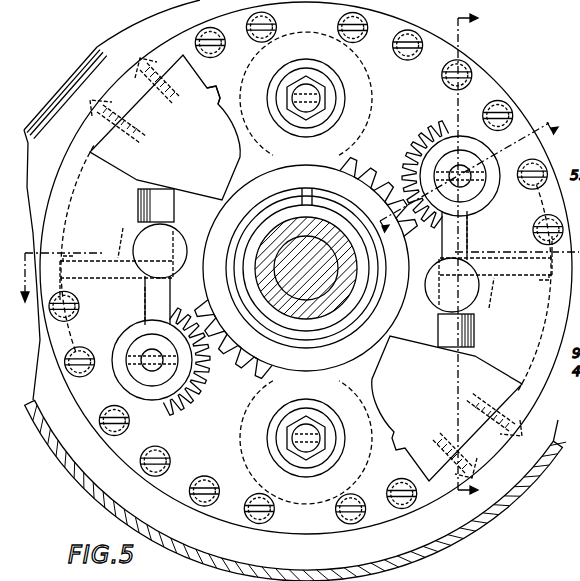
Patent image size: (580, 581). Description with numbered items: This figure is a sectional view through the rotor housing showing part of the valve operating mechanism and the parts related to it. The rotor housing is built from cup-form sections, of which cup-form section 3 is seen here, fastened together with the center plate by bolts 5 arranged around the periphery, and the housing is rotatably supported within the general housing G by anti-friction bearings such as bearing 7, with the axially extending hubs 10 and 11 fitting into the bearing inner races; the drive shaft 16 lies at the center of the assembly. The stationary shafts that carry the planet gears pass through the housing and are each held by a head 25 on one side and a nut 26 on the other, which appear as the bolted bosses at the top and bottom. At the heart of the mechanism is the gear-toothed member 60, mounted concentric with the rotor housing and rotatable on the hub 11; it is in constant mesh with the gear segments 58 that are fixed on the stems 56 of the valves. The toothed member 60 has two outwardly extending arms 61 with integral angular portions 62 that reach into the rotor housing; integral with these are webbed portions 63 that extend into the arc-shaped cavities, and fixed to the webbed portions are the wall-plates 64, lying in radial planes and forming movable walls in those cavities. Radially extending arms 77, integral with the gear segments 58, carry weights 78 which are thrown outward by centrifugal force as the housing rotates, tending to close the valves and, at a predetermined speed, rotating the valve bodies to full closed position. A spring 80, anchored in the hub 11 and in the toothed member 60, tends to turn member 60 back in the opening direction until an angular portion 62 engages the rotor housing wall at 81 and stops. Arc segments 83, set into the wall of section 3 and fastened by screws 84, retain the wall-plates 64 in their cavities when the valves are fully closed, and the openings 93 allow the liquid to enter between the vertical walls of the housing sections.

The cup-form section 3 is at (133, 450).
The bolts 5 is at (476, 73).
The anti-friction bearing 7 is at (475, 186).
The hub 10 is at (479, 258).
The hub 11 is at (333, 233).
The drive shaft 16 is at (306, 268).
The head 25 is at (278, 127).
The nut 26 is at (303, 92).
The valve stem 56 is at (148, 363).
The gear segment 58 is at (178, 392).
The gear-toothed member 60 is at (302, 365).
The outwardly extending arm 61 is at (193, 200).
The angular portion 62 is at (138, 203).
The webbed portion 63 is at (140, 232).
The wall-plate 64 is at (98, 252).
The radially extending arm 77 is at (145, 287).
The weight 78 is at (153, 226).
The spring 80 is at (262, 334).
The rotor housing wall engagement point 81 is at (158, 232).
The arc segment 83 is at (133, 100).
The screws 84 is at (110, 112).
The opening 93 is at (215, 92).
The general housing G is at (62, 55).